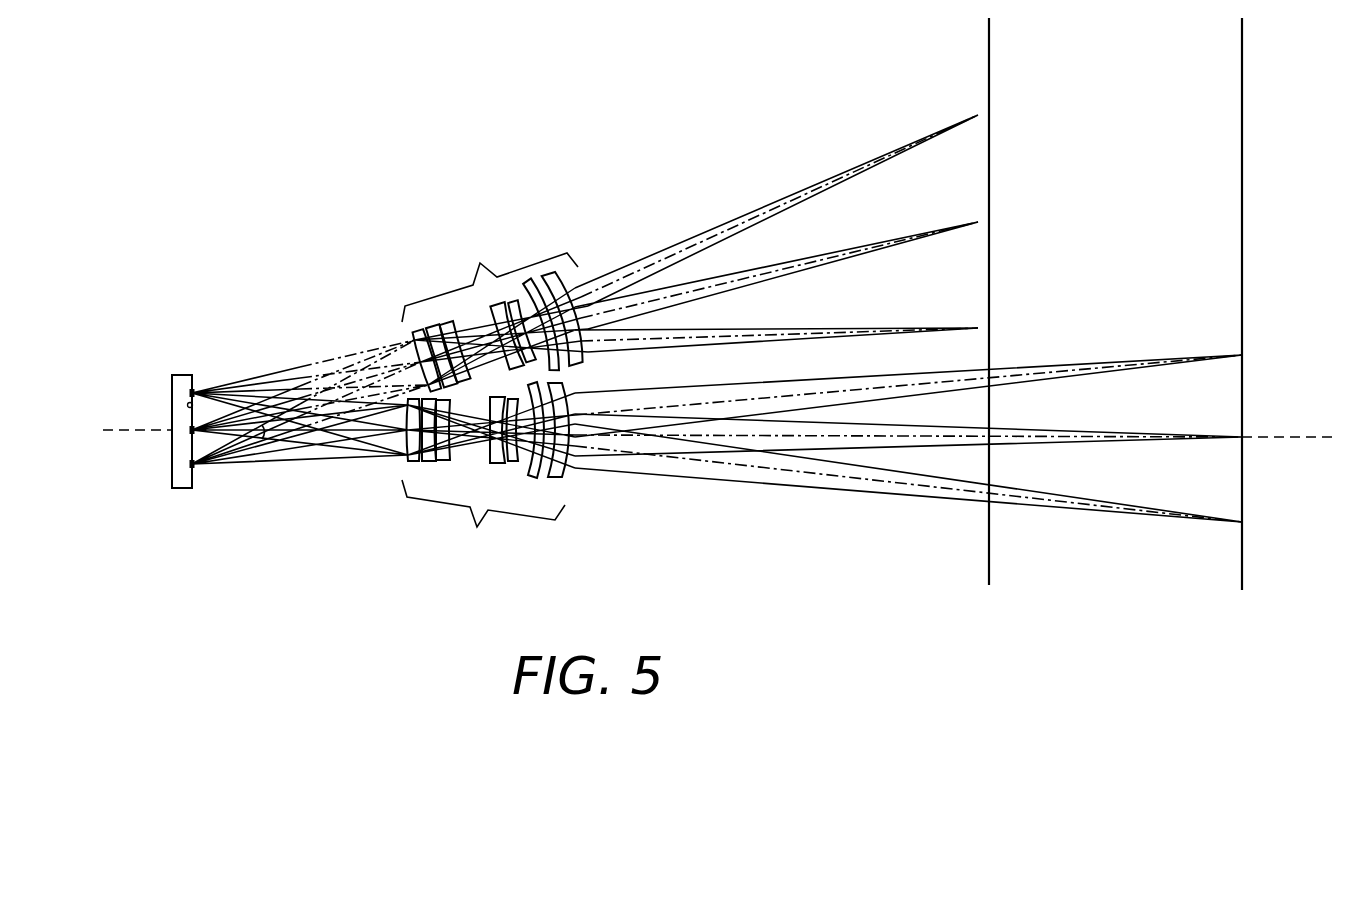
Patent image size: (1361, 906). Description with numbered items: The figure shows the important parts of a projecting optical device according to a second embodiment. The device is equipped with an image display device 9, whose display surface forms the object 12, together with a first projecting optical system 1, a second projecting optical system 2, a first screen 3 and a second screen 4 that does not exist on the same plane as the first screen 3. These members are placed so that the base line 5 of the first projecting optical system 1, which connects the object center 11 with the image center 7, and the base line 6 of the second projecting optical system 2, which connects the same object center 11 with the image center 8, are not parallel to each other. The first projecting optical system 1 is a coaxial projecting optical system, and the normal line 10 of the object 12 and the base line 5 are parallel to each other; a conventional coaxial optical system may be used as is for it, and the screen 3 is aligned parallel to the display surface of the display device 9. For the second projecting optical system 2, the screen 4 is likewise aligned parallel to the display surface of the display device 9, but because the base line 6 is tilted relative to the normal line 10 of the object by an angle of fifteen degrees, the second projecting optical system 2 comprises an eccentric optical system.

The first projecting optical system 1 is at (488, 481).
The second projecting optical system 2 is at (496, 313).
The first screen 3 is at (1242, 560).
The second screen 4 is at (988, 48).
The base line of first projecting optical system 5 is at (323, 437).
The base line of second projecting optical system 6 is at (342, 390).
The image center 7 is at (1242, 437).
The image center 8 is at (988, 215).
The image display device 9 is at (183, 375).
The normal line of object 10 is at (1320, 465).
The object center 11 is at (190, 430).
The object 12 is at (190, 405).